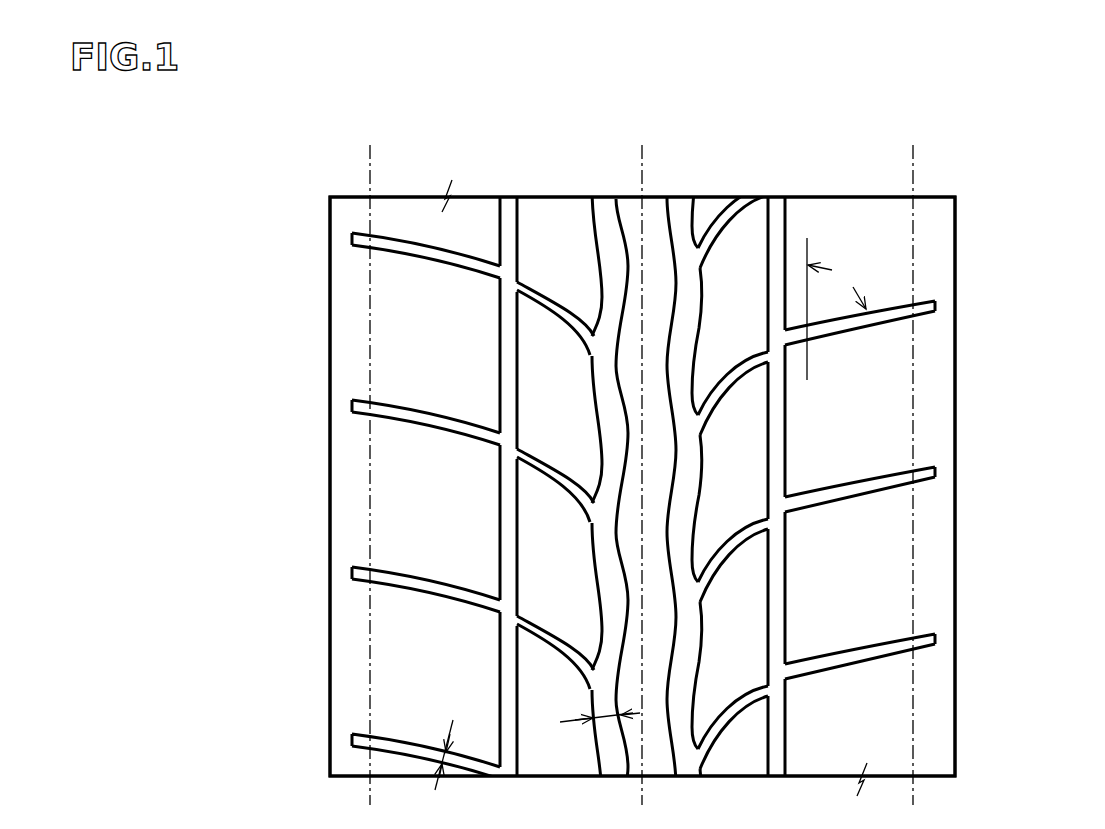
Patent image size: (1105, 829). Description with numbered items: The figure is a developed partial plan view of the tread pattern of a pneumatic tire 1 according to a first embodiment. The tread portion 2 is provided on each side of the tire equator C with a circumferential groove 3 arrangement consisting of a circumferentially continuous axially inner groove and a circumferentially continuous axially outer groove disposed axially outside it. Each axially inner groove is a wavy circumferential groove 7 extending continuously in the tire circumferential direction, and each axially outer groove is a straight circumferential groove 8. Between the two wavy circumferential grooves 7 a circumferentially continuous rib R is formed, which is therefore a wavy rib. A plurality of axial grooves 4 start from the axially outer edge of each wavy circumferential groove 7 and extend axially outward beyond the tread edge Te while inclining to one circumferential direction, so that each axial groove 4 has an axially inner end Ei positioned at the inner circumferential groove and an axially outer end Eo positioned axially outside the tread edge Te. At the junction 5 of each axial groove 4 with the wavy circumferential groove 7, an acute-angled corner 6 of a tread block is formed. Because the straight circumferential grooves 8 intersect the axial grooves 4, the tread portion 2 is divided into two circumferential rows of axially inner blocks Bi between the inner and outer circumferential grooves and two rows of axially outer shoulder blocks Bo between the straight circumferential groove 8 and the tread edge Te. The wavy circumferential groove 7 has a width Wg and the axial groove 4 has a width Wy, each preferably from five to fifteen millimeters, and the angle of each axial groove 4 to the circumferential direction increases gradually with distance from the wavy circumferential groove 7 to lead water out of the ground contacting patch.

The tire 1 is at (995, 158).
The tread portion 2 is at (1008, 215).
The circumferential groove 3 is at (645, 451).
The axial groove 4 is at (852, 334).
The junction 5 is at (573, 513).
The acute-angled corner 6 is at (587, 477).
The wavy circumferential groove 7 is at (600, 208).
The straight circumferential groove 8 is at (507, 208).
The tread edge Te is at (372, 177).
The tire equator C is at (642, 462).
The rib R is at (632, 208).
The axially outer end Eo is at (938, 300).
The axially inner end Ei is at (712, 437).
The axially outer shoulder block Bo is at (417, 362).
The axially inner block Bi is at (561, 406).
The axial groove width Wy is at (430, 753).
The wavy circumferential groove width Wg is at (591, 730).